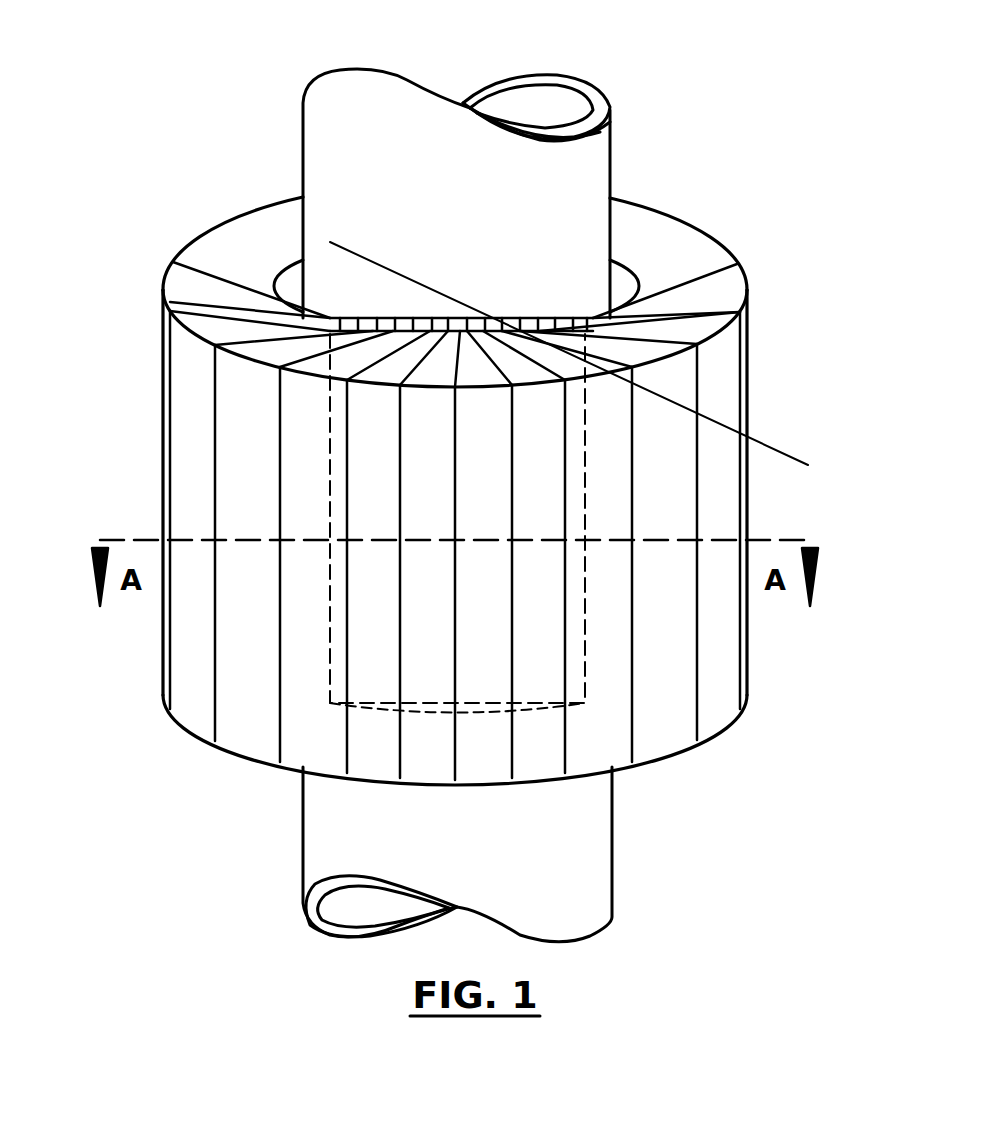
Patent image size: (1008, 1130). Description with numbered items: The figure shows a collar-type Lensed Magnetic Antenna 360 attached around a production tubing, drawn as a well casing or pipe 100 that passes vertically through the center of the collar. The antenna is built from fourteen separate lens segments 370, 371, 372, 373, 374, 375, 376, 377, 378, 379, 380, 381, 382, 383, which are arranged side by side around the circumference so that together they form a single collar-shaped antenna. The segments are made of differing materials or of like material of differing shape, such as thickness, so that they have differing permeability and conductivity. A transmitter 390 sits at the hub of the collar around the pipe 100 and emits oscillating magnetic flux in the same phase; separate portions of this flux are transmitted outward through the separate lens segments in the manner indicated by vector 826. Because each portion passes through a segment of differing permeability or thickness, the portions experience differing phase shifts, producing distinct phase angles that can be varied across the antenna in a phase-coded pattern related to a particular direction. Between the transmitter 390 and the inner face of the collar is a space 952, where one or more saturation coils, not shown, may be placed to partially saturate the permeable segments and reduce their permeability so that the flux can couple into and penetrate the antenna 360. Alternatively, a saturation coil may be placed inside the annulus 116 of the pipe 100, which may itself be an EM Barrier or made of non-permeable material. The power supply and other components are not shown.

The well casing 100 is at (612, 163).
The annulus 116 is at (545, 113).
The Lensed Magnetic Antenna 360 is at (785, 645).
The lens segment 370 is at (223, 256).
The lens segment 371 is at (172, 286).
The lens segment 372 is at (223, 324).
The lens segment 373 is at (248, 412).
The lens segment 374 is at (320, 744).
The lens segment 375 is at (379, 767).
The lens segment 376 is at (435, 772).
The lens segment 377 is at (472, 770).
The lens segment 378 is at (527, 760).
The lens segment 379 is at (592, 745).
The lens segment 380 is at (652, 720).
The lens segment 381 is at (700, 327).
The lens segment 382 is at (700, 292).
The lens segment 383 is at (662, 246).
The transmitter 390 is at (520, 318).
The vector 826 is at (602, 365).
The space 952 is at (285, 276).